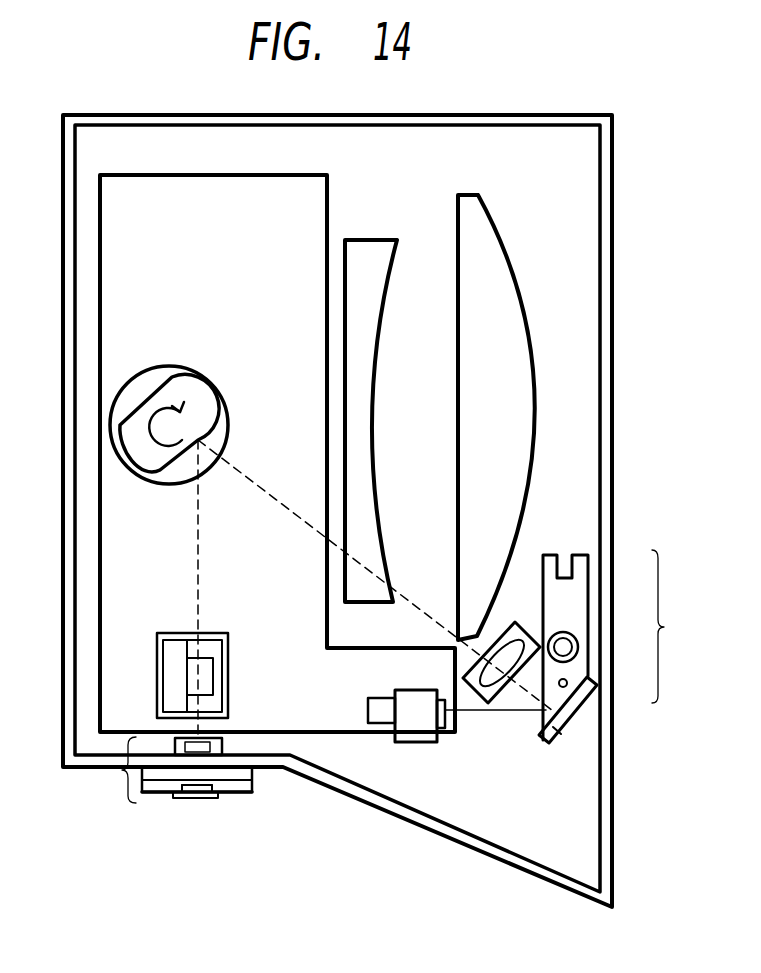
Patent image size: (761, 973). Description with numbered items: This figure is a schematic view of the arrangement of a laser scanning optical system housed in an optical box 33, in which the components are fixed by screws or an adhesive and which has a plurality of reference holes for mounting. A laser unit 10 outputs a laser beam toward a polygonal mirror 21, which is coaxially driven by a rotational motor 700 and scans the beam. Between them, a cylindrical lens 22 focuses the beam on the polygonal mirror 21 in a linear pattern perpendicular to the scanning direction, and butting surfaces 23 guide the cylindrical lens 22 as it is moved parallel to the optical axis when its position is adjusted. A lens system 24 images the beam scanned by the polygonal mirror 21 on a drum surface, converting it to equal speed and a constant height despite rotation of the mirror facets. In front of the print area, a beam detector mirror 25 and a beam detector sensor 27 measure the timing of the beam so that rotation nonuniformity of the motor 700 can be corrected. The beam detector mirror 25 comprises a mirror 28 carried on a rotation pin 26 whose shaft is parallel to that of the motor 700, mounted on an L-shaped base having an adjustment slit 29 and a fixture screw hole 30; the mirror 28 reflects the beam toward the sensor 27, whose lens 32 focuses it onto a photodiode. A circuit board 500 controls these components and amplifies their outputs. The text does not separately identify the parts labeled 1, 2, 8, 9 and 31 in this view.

The base plate 1 is at (198, 800).
The motor 2 is at (225, 748).
The mounting member 8 is at (245, 795).
The support member 9 is at (253, 773).
The laser unit 10 is at (114, 770).
The polygonal mirror 21 is at (170, 395).
The cylindrical lens 22 is at (198, 746).
The butting surfaces 23 is at (207, 647).
The lens system 24 is at (490, 172).
The BD mirror 25 is at (676, 626).
The rotation pin 26 is at (567, 680).
The BD sensor 27 is at (385, 725).
The mirror 28 is at (568, 745).
The adjustment slit 29 is at (565, 570).
The fixture screw hole 30 is at (572, 637).
The lens holder 31 is at (583, 705).
The lens 32 is at (445, 727).
The optical box 33 is at (593, 210).
The circuit board 500 is at (218, 185).
The rotational motor 700 is at (130, 395).